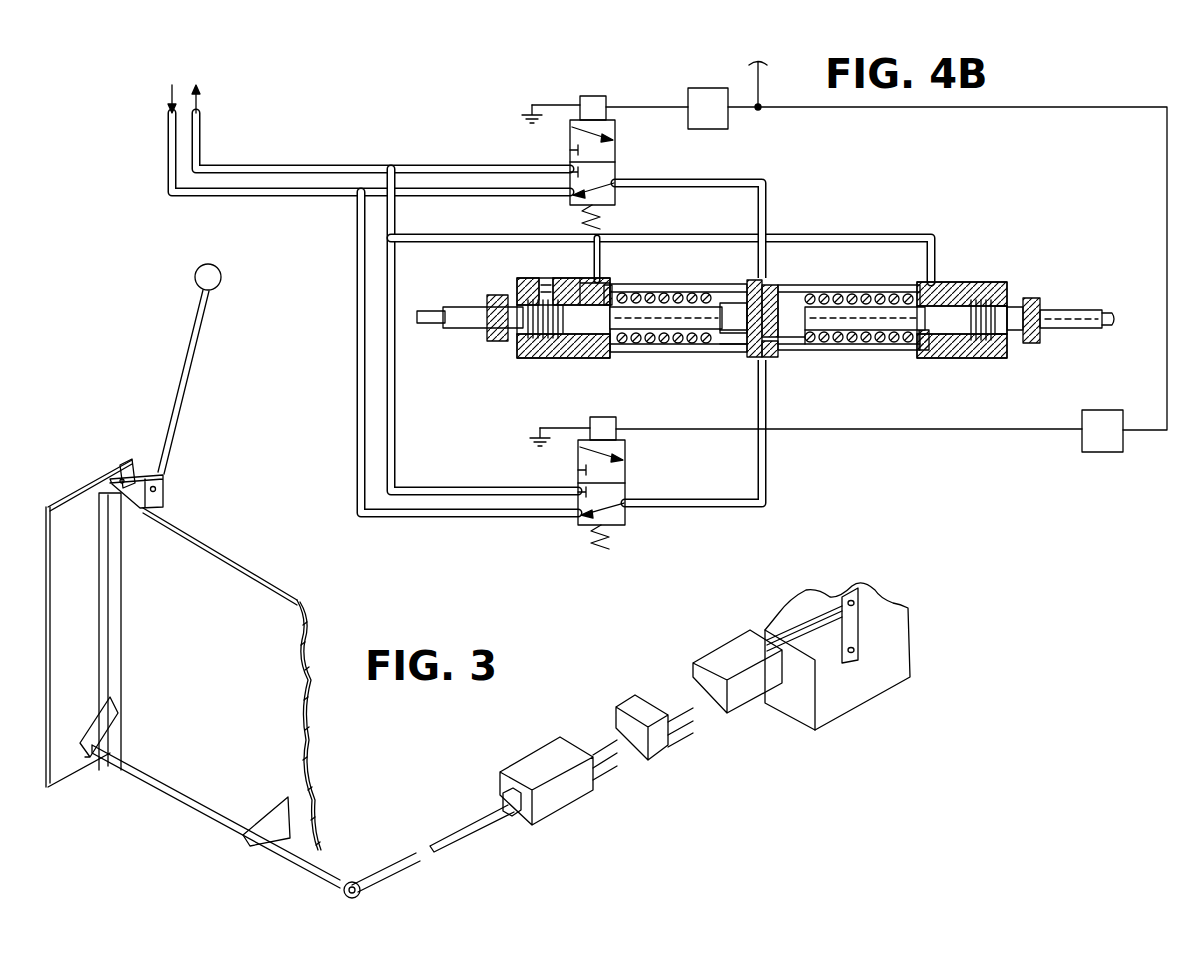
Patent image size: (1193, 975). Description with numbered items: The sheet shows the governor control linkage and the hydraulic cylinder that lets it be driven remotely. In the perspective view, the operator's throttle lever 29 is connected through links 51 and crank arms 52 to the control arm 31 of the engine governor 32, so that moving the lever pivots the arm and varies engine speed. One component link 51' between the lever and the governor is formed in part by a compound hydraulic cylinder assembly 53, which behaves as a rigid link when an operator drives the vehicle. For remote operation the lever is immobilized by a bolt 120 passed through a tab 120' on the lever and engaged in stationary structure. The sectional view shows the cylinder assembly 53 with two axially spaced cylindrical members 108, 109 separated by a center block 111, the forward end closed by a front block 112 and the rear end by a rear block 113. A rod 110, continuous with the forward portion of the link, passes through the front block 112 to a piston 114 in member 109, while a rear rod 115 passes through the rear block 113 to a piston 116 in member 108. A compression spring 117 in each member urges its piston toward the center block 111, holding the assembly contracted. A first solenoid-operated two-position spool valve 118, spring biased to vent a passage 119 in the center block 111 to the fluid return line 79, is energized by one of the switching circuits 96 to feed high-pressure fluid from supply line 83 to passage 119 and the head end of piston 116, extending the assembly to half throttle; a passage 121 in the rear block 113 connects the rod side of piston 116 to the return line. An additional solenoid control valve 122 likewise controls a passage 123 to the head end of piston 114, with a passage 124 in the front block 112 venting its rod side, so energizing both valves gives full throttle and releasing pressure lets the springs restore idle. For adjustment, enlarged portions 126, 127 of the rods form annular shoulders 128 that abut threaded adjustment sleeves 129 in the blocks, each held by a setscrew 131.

In FIG. 3, the throttle lever 29 is at (193, 322).
In FIG. 3, the control arm 31 is at (856, 598).
In FIG. 3, the engine governor 32 is at (850, 704).
In FIG. 3, the links 51 is at (86, 631).
In FIG. 4B, the component link 51' is at (1116, 346).
In FIG. 3, the component link 51' is at (463, 812).
In FIG. 3, the crank arms 52 is at (106, 722).
In FIG. 4B, the compound hydraulic cylinder assembly 53 is at (1001, 236).
In FIG. 3, the compound hydraulic cylinder assembly 53 is at (634, 664).
In FIG. 4B, the fluid return line 79 is at (204, 136).
In FIG. 4B, the high-pressure fluid supply line 83 is at (168, 128).
In FIG. 4B, the switching circuits 96 is at (728, 118).
In FIG. 4B, the rear cylindrical member 108 is at (700, 354).
In FIG. 4B, the cylindrical member 109 is at (850, 352).
In FIG. 4B, the rod 110 is at (1076, 312).
In FIG. 4B, the center block 111 is at (769, 284).
In FIG. 4B, the front block 112 is at (1002, 358).
In FIG. 4B, the rear block 113 is at (526, 356).
In FIG. 4B, the piston 114 is at (790, 300).
In FIG. 4B, the rear rod 115 is at (460, 307).
In FIG. 4B, the piston 116 is at (732, 347).
In FIG. 4B, the compression spring 117 is at (622, 344).
In FIG. 4B, the solenoid-operated two-position spool valve 118 is at (613, 152).
In FIG. 4B, the passage 119 is at (754, 290).
In FIG. 3, the bolt 120 is at (114, 462).
In FIG. 3, the tab 120' is at (87, 477).
In FIG. 4B, the passage 121 is at (596, 285).
In FIG. 4B, the solenoid control valve 122 is at (628, 515).
In FIG. 4B, the passage 123 is at (772, 357).
In FIG. 4B, the passage 124 is at (932, 292).
In FIG. 4B, the enlarged portion 126 is at (848, 310).
In FIG. 4B, the enlarged portion 127 is at (680, 328).
In FIG. 4B, the annular shoulders 128 is at (607, 292).
In FIG. 4B, the adjustment sleeves 129 is at (492, 332).
In FIG. 4B, the setscrew 131 is at (540, 284).